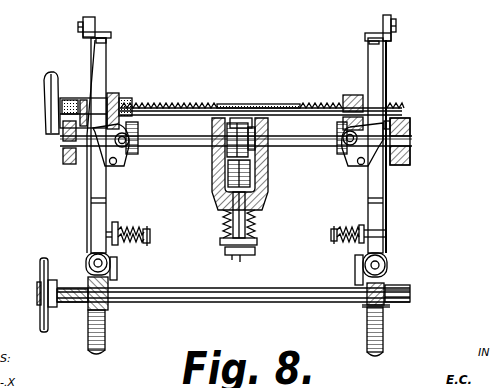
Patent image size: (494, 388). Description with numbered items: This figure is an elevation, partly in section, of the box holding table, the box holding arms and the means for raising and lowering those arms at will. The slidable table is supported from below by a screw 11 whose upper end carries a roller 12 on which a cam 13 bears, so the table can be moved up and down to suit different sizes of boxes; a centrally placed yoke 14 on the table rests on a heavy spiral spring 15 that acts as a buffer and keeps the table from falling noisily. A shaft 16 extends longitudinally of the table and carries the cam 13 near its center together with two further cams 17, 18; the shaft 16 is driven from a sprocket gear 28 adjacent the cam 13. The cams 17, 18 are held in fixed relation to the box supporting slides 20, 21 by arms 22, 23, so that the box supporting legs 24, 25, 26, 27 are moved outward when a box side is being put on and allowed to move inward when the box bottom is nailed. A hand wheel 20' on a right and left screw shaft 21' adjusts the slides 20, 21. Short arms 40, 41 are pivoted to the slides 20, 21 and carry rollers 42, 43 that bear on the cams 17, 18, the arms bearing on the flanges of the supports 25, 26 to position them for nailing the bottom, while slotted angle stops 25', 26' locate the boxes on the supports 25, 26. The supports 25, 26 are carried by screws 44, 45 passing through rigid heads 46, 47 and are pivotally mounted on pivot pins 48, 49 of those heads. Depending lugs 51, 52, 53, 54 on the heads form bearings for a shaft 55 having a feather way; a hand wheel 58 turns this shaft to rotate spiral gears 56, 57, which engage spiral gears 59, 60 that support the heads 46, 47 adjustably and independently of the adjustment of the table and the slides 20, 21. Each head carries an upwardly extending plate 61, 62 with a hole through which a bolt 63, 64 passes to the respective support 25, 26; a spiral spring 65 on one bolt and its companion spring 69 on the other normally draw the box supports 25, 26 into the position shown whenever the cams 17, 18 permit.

The screw 11 is at (250, 254).
The roller 12 is at (240, 178).
The cam 13 is at (236, 142).
The yoke 14 is at (217, 197).
The spiral spring 15 is at (225, 224).
The shaft 16 is at (410, 140).
The cam 17 is at (133, 148).
The cam 18 is at (347, 148).
The box supporting slide 20 is at (104, 115).
The hand wheel 20' is at (34, 103).
The box supporting slide 21 is at (261, 92).
The right and left screw shaft 21' is at (252, 91).
The arm 22 is at (147, 152).
The arm 23 is at (340, 152).
The box supporting leg 24 is at (389, 80).
The box support 25 is at (374, 22).
The slotted angle stop 25' is at (409, 18).
The box support 26 is at (102, 27).
The slotted angle stop 26' is at (68, 20).
The box supporting leg 27 is at (88, 66).
The sprocket gear 28 is at (253, 128).
The short arm 40 is at (112, 141).
The short arm 41 is at (365, 150).
The roller 42 is at (183, 103).
The roller 43 is at (343, 101).
The screw 44 is at (367, 342).
The screw 45 is at (105, 348).
The rigid head 46 is at (108, 263).
The rigid head 47 is at (362, 255).
The pivot pin 48 is at (387, 263).
The pivot pin 49 is at (117, 270).
The depending lug 51 is at (88, 305).
The depending lug 52 is at (108, 302).
The depending lug 53 is at (366, 300).
The depending lug 54 is at (385, 302).
The shaft 55 is at (207, 295).
The spiral gear 56 is at (88, 330).
The spiral gear 57 is at (383, 306).
The hand wheel 58 is at (43, 323).
The spiral gear 59 is at (79, 288).
The spiral gear 60 is at (388, 288).
The upwardly extending plate 61 is at (120, 223).
The upwardly extending plate 62 is at (360, 225).
The bolt 63 is at (331, 236).
The bolt 64 is at (335, 243).
The spiral spring 65 is at (150, 239).
The left spring seat 69 is at (150, 235).